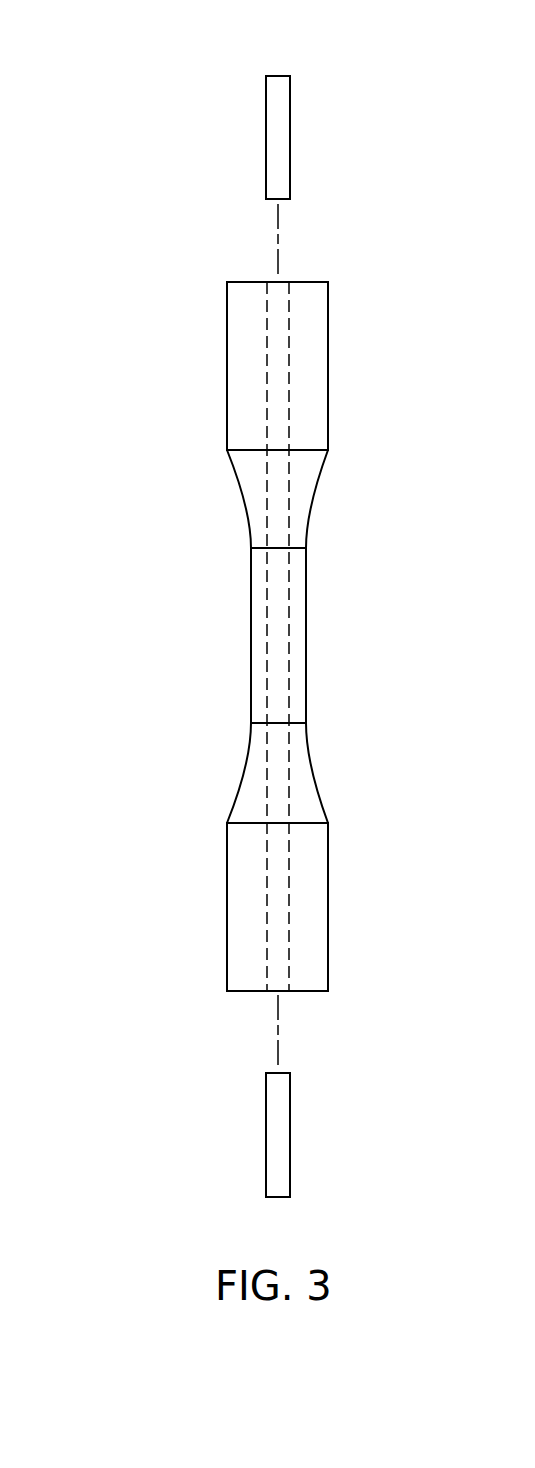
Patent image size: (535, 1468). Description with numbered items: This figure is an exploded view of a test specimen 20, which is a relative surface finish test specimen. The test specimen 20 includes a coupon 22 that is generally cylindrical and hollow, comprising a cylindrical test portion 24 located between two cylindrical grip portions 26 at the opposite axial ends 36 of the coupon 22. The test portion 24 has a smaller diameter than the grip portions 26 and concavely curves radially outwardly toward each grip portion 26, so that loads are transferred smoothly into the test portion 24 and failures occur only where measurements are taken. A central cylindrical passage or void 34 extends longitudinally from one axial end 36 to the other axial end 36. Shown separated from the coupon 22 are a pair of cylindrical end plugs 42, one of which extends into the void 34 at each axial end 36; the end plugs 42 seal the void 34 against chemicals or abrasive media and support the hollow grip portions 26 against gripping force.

The test specimen 20 is at (228, 636).
The coupon 22 is at (284, 617).
The test portion 24 is at (250, 638).
The grip portions 26 is at (328, 367).
The passage or void 34 is at (275, 409).
The axial ends 36 is at (240, 280).
The end plugs 42 is at (291, 143).